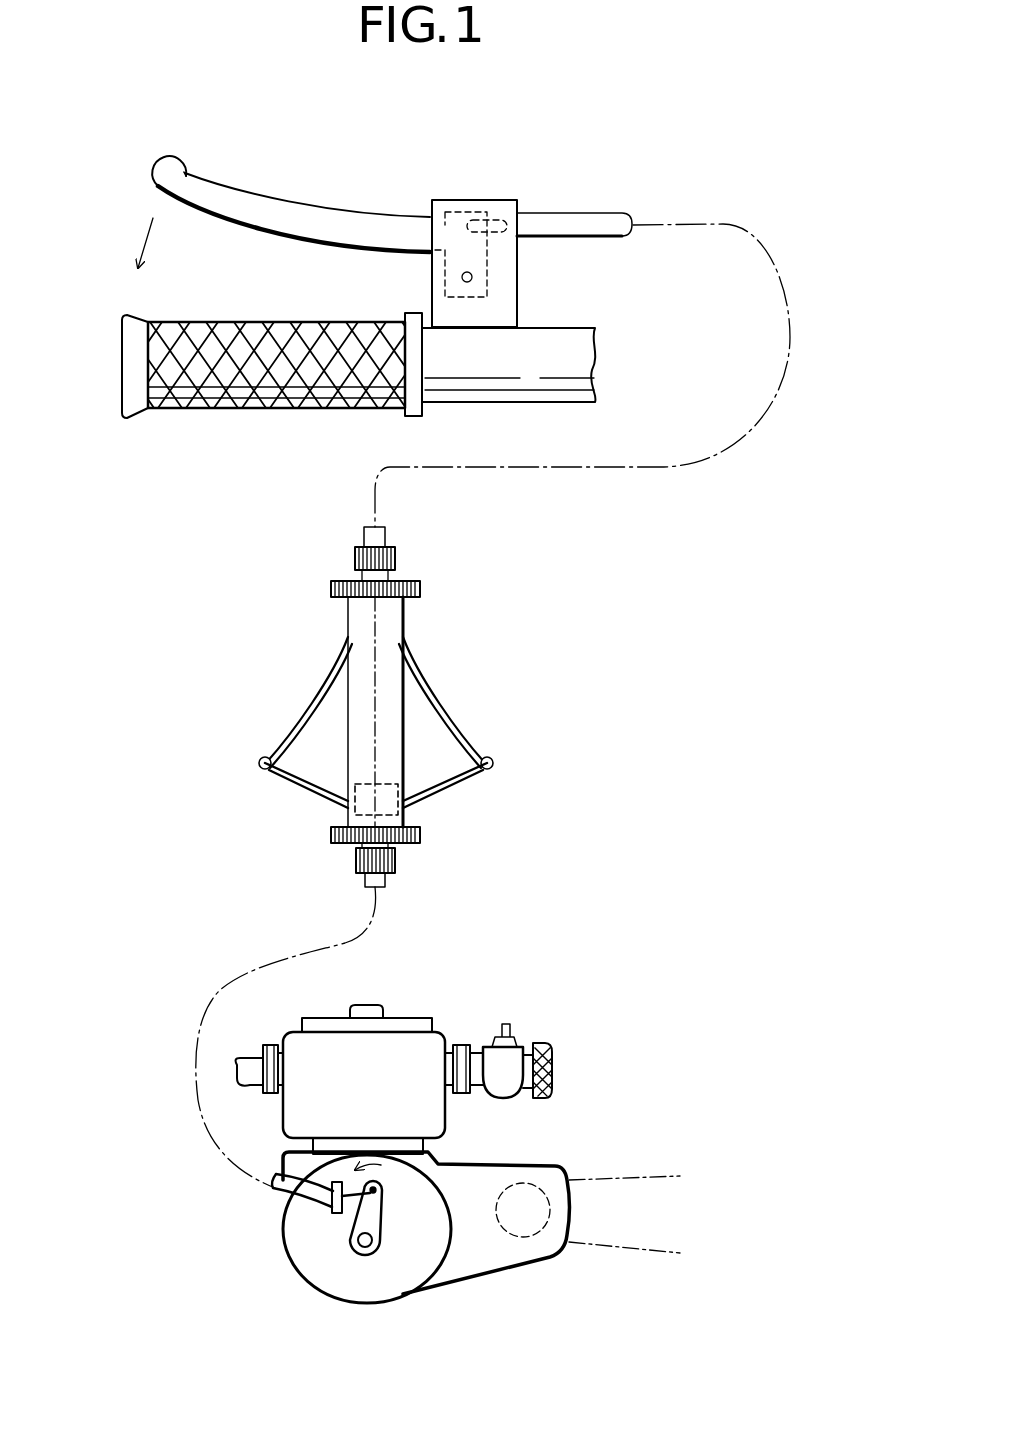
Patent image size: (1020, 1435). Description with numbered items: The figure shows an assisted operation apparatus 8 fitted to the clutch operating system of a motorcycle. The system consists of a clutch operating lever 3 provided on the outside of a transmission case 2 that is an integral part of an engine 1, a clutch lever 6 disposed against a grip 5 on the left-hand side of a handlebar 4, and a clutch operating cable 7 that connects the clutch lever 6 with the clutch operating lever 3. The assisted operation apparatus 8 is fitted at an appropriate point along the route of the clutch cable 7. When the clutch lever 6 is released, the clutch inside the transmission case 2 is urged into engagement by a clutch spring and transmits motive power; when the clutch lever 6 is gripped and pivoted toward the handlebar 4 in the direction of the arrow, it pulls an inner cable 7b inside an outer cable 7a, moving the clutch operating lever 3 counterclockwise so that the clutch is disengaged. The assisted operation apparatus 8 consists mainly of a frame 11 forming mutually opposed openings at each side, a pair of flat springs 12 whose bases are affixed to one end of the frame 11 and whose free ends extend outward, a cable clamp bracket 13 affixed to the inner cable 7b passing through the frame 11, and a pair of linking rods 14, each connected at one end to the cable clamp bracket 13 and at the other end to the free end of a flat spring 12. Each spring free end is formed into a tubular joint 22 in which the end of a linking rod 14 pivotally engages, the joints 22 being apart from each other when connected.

The engine 1 is at (405, 1040).
The transmission case 2 is at (488, 1172).
The clutch operating lever 3 is at (375, 1222).
The handlebar 4 is at (562, 333).
The grip 5 is at (210, 410).
The clutch lever 6 is at (285, 213).
The clutch operating cable 7 is at (477, 689).
The outer cable 7a is at (593, 220).
The inner cable 7b is at (588, 123).
The assisted operation apparatus 8 is at (382, 720).
The frame 11 is at (357, 630).
The flat springs 12 is at (298, 723).
The cable clamp bracket 13 is at (385, 817).
The linking rods 14 is at (298, 792).
The tubular joint 22 is at (259, 760).